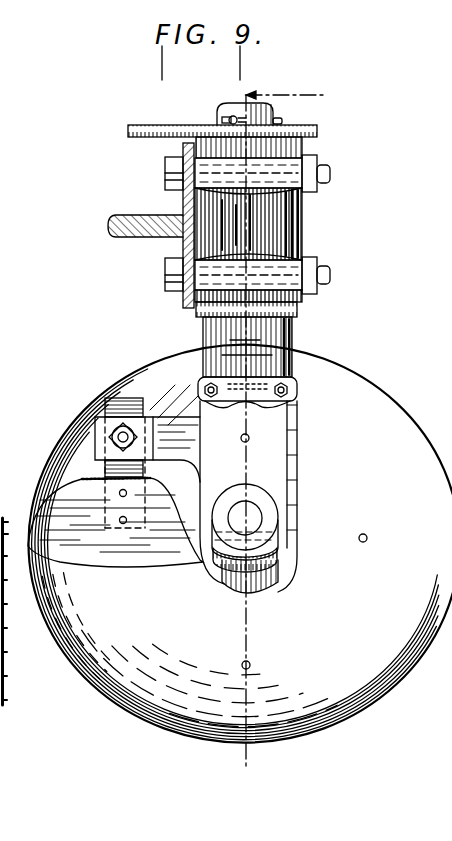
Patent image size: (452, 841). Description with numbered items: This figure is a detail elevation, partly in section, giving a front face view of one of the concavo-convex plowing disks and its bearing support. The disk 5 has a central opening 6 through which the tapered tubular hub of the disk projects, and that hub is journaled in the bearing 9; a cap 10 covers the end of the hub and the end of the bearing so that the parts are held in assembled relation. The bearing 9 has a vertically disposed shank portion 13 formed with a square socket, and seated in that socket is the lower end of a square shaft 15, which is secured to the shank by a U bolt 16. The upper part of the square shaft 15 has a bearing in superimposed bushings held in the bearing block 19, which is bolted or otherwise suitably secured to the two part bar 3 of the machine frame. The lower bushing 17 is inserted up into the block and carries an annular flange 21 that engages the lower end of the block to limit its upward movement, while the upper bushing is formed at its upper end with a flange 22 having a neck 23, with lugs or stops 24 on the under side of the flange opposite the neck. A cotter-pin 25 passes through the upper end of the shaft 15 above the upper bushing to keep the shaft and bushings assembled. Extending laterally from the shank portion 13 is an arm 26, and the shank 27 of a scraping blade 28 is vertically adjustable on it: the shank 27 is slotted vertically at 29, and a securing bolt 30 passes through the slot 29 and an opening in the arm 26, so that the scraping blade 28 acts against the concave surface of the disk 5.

The two part bar 3 is at (108, 229).
The concavo-convex disk 5 is at (370, 690).
The central opening 6 is at (270, 592).
The bearing 9 is at (240, 566).
The cap 10 is at (281, 424).
The shank portion 13 is at (272, 467).
The square shaft 15 is at (278, 112).
The U bolt 16 is at (298, 386).
The lower bushing 17 is at (295, 338).
The bearing block 19 is at (303, 232).
The annular flange 21 is at (198, 310).
The flange 22 is at (318, 133).
The neck 23 is at (128, 131).
The lugs or stops 24 is at (183, 152).
The cotter-pin 25 is at (222, 119).
The arm 26 is at (178, 447).
The shank 27 is at (105, 468).
The scraping blade 28 is at (143, 552).
The slot 29 is at (105, 403).
The securing bolt 30 is at (112, 436).